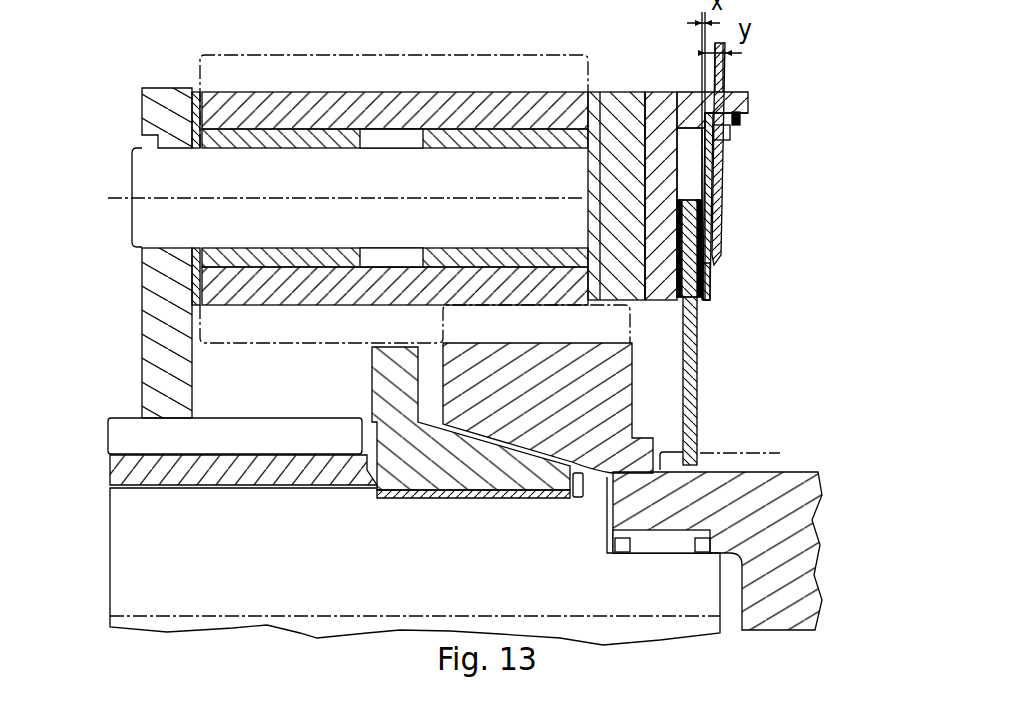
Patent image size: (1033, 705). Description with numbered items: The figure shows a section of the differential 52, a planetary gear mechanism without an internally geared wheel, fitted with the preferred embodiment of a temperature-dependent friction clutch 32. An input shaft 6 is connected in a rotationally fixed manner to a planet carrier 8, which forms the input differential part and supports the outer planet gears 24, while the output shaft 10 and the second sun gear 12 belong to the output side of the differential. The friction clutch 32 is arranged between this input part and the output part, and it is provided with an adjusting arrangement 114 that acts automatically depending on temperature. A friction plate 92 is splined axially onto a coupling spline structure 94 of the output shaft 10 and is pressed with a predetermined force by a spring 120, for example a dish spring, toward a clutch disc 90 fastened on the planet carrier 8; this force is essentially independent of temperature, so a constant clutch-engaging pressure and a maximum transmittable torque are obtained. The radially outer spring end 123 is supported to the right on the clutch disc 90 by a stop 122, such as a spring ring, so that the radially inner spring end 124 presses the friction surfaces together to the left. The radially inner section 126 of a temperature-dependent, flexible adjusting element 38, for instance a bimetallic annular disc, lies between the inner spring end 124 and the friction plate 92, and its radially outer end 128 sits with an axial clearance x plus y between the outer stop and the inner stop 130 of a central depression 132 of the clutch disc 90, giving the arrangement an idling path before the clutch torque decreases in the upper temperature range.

The input shaft 6 is at (125, 540).
The planet carrier 8 is at (152, 305).
The output shaft 10 is at (795, 545).
The second sun gear 12 is at (127, 430).
The outer planet gears 24 is at (560, 95).
The friction clutch 32 is at (755, 320).
The adjusting element 38 is at (710, 284).
The differential 52 is at (128, 67).
The clutch disc 90 is at (640, 100).
The friction plate 92 is at (697, 378).
The coupling spline structure 94 is at (767, 457).
The adjusting arrangement 114 is at (760, 161).
The spring 120 is at (727, 187).
The stop 122 is at (742, 133).
The radially outer spring end 123 is at (745, 128).
The radially inner spring end 124 is at (722, 242).
The radially inner section 126 is at (713, 270).
The radially outer end 128 is at (735, 140).
The inner stop 130 is at (690, 128).
The central depression 132 is at (612, 130).